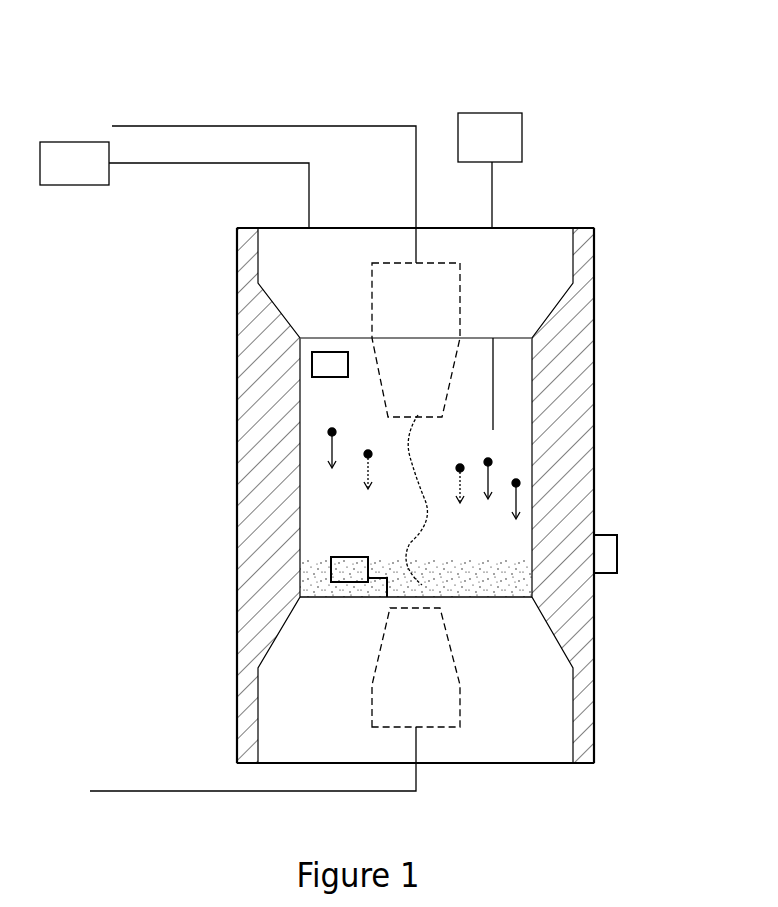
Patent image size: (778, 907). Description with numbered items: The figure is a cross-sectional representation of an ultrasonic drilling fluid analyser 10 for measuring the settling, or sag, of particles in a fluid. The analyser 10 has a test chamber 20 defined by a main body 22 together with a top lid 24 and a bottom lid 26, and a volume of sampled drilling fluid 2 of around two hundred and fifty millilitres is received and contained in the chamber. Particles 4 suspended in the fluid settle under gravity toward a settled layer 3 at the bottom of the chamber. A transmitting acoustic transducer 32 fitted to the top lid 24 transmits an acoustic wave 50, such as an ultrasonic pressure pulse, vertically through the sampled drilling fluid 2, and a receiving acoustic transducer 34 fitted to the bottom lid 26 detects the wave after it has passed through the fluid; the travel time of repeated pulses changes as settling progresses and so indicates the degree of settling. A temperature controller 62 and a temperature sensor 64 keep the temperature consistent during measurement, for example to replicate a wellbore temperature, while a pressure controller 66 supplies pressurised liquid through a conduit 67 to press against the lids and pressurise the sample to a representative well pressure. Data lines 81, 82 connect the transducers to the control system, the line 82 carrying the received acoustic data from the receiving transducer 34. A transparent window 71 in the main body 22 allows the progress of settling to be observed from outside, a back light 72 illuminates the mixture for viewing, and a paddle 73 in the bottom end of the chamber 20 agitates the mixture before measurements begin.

The analyser 10 is at (447, 70).
The sampled drilling fluid 2 is at (328, 498).
The particle bed 3 is at (322, 580).
The droplets 4 is at (492, 462).
The test chamber 20 is at (518, 395).
The main body 22 is at (568, 579).
The top lid 24 is at (499, 290).
The bottom lid 26 is at (499, 712).
The transmitting acoustic transducer 32 is at (390, 370).
The receiving acoustic transducer 34 is at (430, 700).
The acoustic wave 50 is at (418, 522).
The temperature controller 62 is at (474, 149).
The temperature sensor 64 is at (493, 358).
The pressure controller 66 is at (58, 174).
The conduit 67 is at (197, 164).
The transparent window 71 is at (617, 548).
The back light 72 is at (310, 360).
The paddle 73 is at (352, 556).
The data line 81 is at (287, 125).
The data line 82 is at (250, 790).